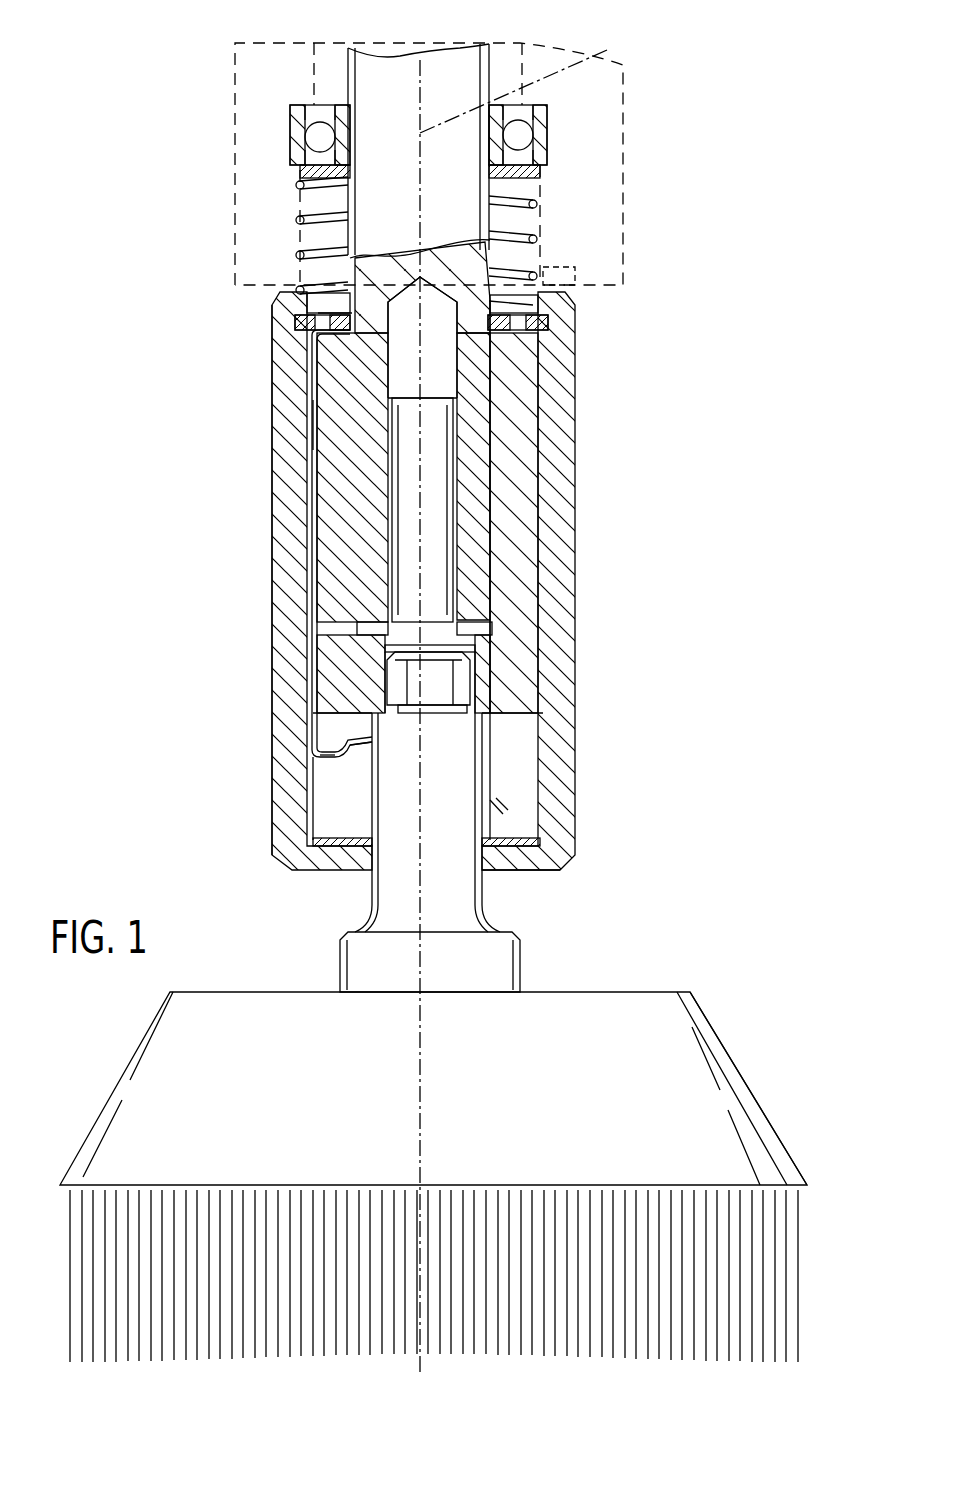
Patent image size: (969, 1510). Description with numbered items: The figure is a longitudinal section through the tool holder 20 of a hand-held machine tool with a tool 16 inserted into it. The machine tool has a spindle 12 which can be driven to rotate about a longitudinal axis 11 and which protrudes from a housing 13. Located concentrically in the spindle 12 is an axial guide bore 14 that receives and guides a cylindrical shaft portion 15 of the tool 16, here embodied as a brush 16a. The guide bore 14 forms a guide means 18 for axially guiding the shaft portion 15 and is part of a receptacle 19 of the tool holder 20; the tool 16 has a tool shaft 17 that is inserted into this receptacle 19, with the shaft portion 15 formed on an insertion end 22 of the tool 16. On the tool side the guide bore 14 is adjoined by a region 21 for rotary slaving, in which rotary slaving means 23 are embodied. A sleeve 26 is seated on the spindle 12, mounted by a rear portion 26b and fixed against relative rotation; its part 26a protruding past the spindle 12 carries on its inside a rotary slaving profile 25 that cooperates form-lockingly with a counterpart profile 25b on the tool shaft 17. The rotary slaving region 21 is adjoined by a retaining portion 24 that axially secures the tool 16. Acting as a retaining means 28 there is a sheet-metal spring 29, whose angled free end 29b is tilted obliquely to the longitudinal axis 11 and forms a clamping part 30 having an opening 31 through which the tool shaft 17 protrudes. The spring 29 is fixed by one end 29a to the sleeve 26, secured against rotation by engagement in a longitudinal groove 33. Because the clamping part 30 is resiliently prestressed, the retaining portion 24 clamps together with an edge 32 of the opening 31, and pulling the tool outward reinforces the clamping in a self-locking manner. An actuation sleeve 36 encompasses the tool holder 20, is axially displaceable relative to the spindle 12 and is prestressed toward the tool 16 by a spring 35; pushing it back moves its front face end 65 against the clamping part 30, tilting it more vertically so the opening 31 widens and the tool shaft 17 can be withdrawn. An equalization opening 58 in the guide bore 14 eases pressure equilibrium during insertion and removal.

The longitudinal axis 11 is at (596, 62).
The spindle 12 is at (455, 64).
The housing 13 is at (612, 183).
The guide bore 14 is at (447, 377).
The shaft portion 15 is at (460, 490).
The tool 16 is at (634, 914).
The brush 16a is at (727, 1118).
The tool shaft 17 is at (392, 872).
The guide means 18 is at (478, 570).
The receptacle 19 is at (520, 735).
The tool holder 20 is at (226, 552).
The region for rotary slaving 21 is at (440, 652).
The insertion end 22 is at (396, 388).
The rotary slaving means 23 is at (488, 673).
The retaining portion 24 is at (490, 773).
The rotary slaving profile 25 is at (385, 700).
The counterpart profile 25b is at (525, 712).
The sleeve 26 is at (520, 545).
The protruding part of sleeve 26a is at (345, 660).
The rear portion of sleeve 26b is at (528, 393).
The retaining means 28 is at (345, 778).
The sheet-metal spring 29 is at (330, 752).
The end of sheet-metal spring 29a is at (312, 452).
The angled free end 29b is at (540, 843).
The clamping part 30 is at (490, 803).
The opening 31 is at (505, 815).
The edge of opening 32 is at (368, 746).
The longitudinal groove 33 is at (312, 607).
The spring 35 is at (535, 236).
The actuation sleeve 36 is at (558, 443).
The equalization opening 58 is at (576, 284).
The front face end 65 is at (528, 870).